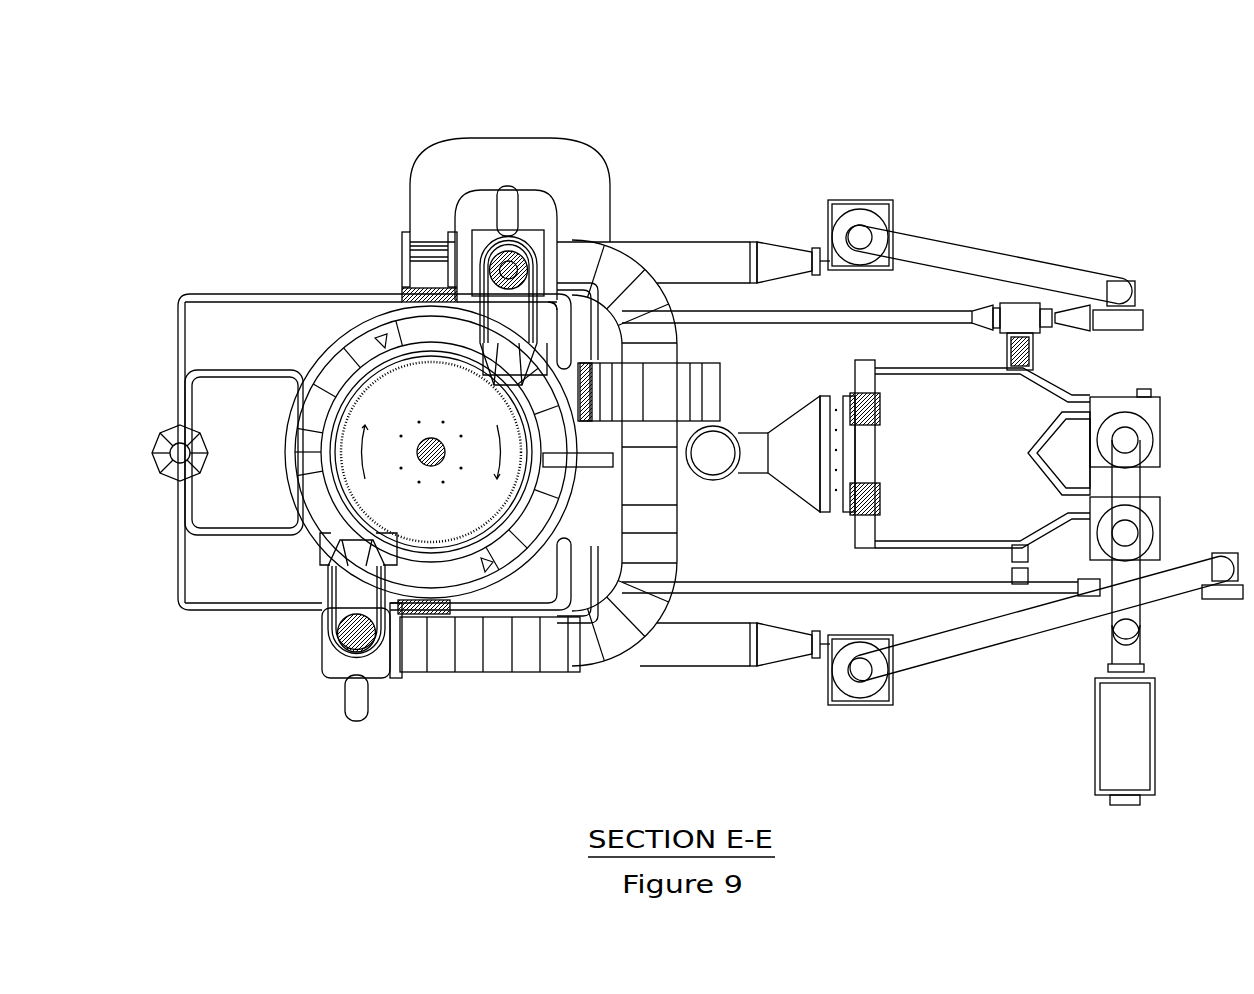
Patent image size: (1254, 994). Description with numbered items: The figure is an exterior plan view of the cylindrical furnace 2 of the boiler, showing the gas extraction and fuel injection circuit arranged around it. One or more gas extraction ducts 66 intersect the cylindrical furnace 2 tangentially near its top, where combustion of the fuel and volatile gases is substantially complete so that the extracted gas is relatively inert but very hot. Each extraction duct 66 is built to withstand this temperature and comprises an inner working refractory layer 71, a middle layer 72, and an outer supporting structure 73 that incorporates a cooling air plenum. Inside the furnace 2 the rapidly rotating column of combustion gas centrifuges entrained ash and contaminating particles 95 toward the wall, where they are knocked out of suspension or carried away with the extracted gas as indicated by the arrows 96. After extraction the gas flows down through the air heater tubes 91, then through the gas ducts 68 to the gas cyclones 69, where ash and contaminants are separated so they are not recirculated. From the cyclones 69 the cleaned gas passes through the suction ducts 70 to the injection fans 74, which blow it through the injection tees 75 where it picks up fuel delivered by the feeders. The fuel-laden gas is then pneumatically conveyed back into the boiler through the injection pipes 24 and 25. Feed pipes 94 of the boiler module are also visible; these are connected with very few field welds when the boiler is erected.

The cylindrical furnace 2 is at (330, 398).
The injection pipe 24 is at (763, 598).
The injection pipe 25 is at (765, 290).
The gas extraction duct 66 is at (548, 232).
The gas duct 68 is at (748, 240).
The gas cyclone 69 is at (888, 200).
The suction duct 70 is at (962, 248).
The inner working refractory layer 71 is at (480, 265).
The middle layer 72 is at (445, 255).
The outer supporting structure 73 is at (413, 290).
The injection fan 74 is at (1148, 316).
The injection tee 75 is at (978, 322).
The air heater tube 91 is at (525, 262).
The feed pipe 94 is at (450, 438).
The entrained ash and contaminating particles 95 is at (340, 462).
The arrows 96 is at (547, 420).